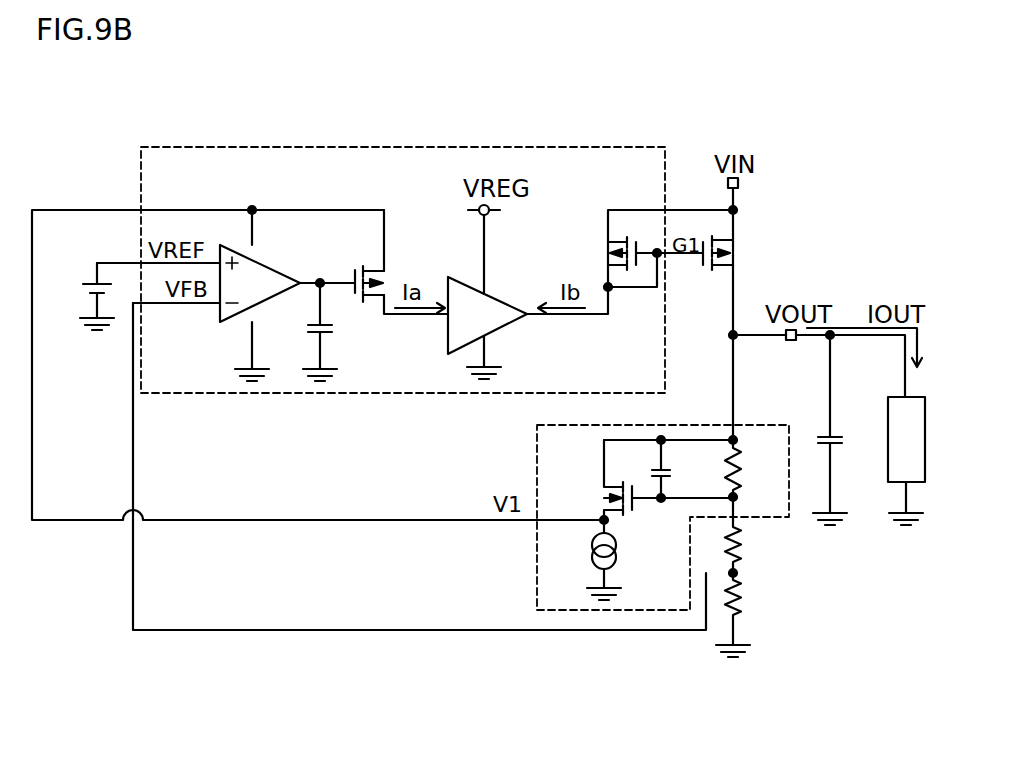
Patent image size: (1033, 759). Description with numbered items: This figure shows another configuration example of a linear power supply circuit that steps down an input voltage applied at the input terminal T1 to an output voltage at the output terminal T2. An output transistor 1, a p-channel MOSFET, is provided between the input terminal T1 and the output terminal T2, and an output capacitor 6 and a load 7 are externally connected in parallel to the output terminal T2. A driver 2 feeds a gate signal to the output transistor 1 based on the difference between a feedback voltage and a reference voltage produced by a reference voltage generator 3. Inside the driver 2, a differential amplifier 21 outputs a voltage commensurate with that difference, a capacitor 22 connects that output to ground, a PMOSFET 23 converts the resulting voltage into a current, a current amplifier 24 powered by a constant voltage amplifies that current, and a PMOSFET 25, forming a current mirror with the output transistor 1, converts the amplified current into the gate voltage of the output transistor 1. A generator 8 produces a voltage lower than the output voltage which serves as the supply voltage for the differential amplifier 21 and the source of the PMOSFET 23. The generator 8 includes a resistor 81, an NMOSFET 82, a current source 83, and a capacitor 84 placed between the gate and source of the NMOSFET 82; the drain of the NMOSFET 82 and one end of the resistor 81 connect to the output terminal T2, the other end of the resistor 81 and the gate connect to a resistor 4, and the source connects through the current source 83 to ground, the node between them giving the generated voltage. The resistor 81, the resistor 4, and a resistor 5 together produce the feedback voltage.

The output transistor 1 is at (739, 255).
The driver 2 is at (403, 146).
The reference voltage generator 3 is at (82, 287).
The resistor 4 is at (745, 547).
The resistor 5 is at (745, 600).
The output capacitor 6 is at (844, 439).
The load 7 is at (925, 439).
The generator 8 is at (694, 424).
The differential amplifier 21 is at (263, 262).
The capacitor 22 is at (333, 332).
The PMOSFET 23 is at (385, 288).
The current amplifier 24 is at (495, 294).
The PMOSFET 25 is at (603, 255).
The resistor 81 is at (745, 473).
The NMOSFET 82 is at (599, 494).
The current source 83 is at (592, 552).
The capacitor 84 is at (674, 474).
The input terminal T1 is at (740, 186).
The output terminal T2 is at (791, 346).